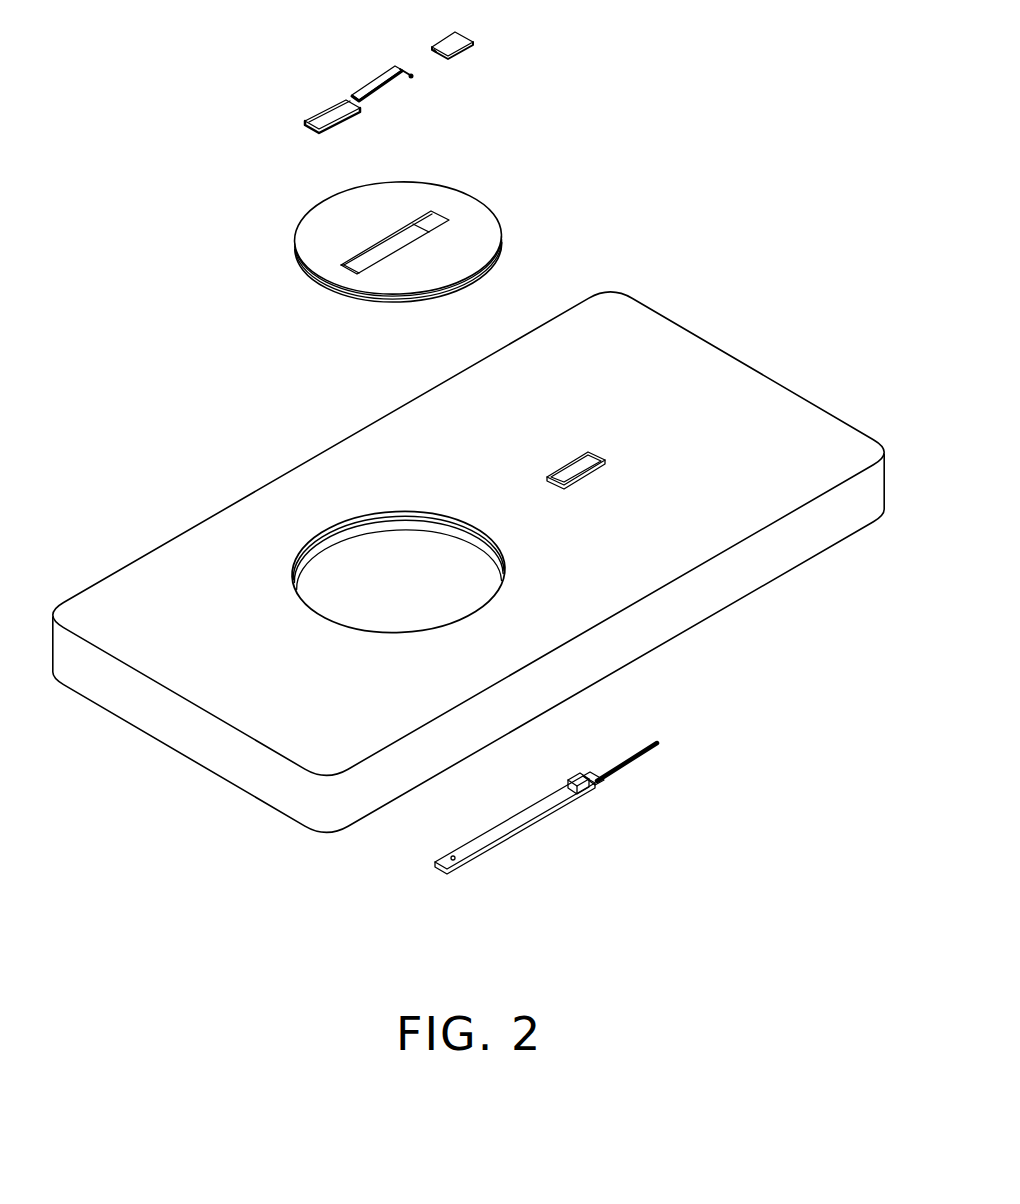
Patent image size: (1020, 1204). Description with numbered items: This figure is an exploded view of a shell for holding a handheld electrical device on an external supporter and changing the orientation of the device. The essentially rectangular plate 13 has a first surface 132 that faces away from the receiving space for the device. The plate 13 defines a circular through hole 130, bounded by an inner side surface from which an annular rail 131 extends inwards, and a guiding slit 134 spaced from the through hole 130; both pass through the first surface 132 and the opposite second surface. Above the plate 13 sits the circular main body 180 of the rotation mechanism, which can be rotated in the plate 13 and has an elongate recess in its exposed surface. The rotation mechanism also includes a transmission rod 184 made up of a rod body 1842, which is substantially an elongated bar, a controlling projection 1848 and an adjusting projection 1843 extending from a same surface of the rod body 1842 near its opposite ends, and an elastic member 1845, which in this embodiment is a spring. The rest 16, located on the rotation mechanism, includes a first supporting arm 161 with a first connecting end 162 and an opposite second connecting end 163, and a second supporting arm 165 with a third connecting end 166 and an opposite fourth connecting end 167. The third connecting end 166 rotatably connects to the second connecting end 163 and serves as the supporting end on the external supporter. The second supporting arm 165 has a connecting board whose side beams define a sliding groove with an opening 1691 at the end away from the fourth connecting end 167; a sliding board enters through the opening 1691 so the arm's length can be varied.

The plate 13 is at (176, 518).
The through hole 130 is at (418, 552).
The annular rail 131 is at (350, 517).
The first surface 132 is at (737, 405).
The guiding slit 134 is at (597, 457).
The main body 180 is at (477, 230).
The rest 16 is at (553, 73).
The first supporting arm 161 is at (463, 69).
The first connecting end 162 is at (474, 38).
The second connecting end 163 is at (430, 50).
The second supporting arm 165 is at (351, 129).
The third connecting end 166 is at (403, 68).
The fourth connecting end 167 is at (311, 124).
The opening 1691 is at (347, 98).
The transmission rod 184 is at (768, 775).
The rod body 1842 is at (510, 827).
The adjusting projection 1843 is at (455, 861).
The elastic member 1845 is at (642, 757).
The controlling projection 1848 is at (587, 792).